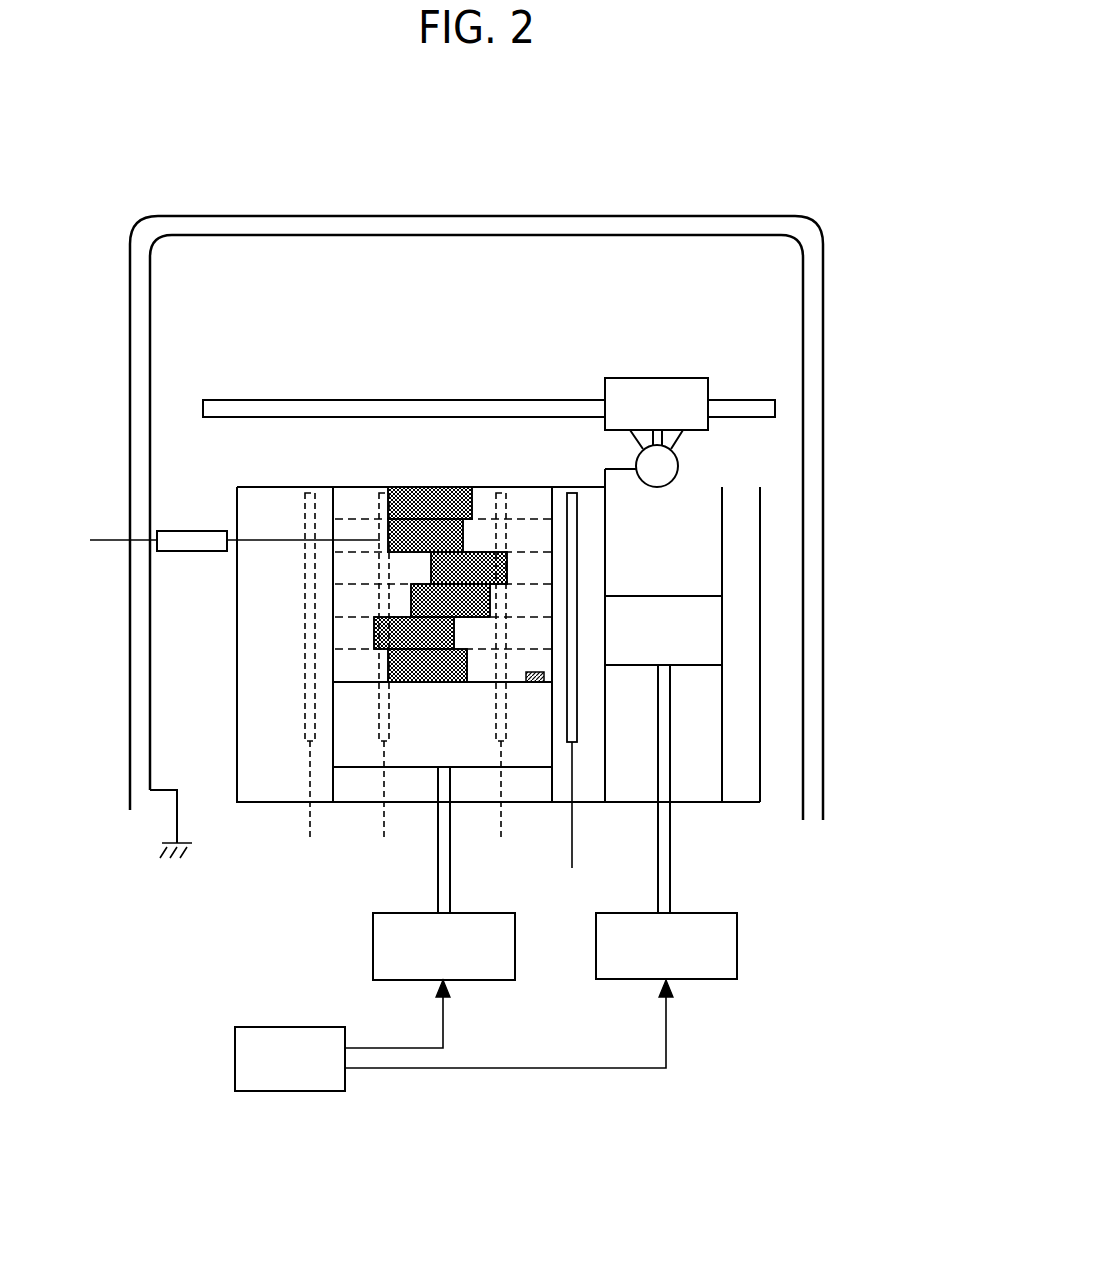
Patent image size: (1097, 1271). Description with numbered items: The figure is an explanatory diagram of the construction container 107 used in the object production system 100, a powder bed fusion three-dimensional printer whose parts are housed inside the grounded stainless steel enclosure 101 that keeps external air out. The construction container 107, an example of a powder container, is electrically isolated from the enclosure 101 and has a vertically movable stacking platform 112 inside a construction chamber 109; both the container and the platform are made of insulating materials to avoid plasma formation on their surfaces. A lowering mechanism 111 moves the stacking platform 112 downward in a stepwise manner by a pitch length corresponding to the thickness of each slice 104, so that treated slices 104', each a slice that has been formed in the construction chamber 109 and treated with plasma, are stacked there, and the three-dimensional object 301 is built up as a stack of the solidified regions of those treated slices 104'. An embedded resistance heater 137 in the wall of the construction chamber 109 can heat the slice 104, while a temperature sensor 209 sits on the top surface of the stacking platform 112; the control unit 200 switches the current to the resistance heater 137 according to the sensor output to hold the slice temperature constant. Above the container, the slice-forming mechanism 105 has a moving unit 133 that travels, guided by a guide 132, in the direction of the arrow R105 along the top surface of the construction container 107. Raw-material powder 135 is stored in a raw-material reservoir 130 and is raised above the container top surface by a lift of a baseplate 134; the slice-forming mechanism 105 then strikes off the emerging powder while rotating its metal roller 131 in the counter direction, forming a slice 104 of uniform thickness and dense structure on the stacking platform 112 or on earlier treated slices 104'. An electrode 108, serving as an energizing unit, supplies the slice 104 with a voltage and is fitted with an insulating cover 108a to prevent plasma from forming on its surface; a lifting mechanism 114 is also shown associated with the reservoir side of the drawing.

The object production system 100 is at (633, 184).
The enclosure 101 is at (826, 259).
The arrow R105 is at (580, 369).
The slice-forming mechanism 105 is at (675, 375).
The moving unit 133 is at (709, 388).
The guide 132 is at (775, 408).
The metal roller 131 is at (680, 465).
The raw-material powder 135 is at (667, 523).
The raw-material reservoir 130 is at (707, 568).
The baseplate 134 is at (707, 636).
The construction container 107 is at (760, 738).
The temperature sensor 209 is at (536, 672).
The electrode 108 is at (270, 540).
The insulating cover 108a is at (197, 531).
The slice 104 is at (362, 613).
The treated slice 104' is at (397, 560).
The three-dimensional object 301 is at (445, 488).
The construction chamber 109 is at (523, 527).
The stacking platform 112 is at (345, 719).
The resistance heater 137 is at (315, 741).
The lowering mechanism 111 is at (373, 948).
The lifting mechanism 114 is at (738, 948).
The control unit 200 is at (290, 1027).